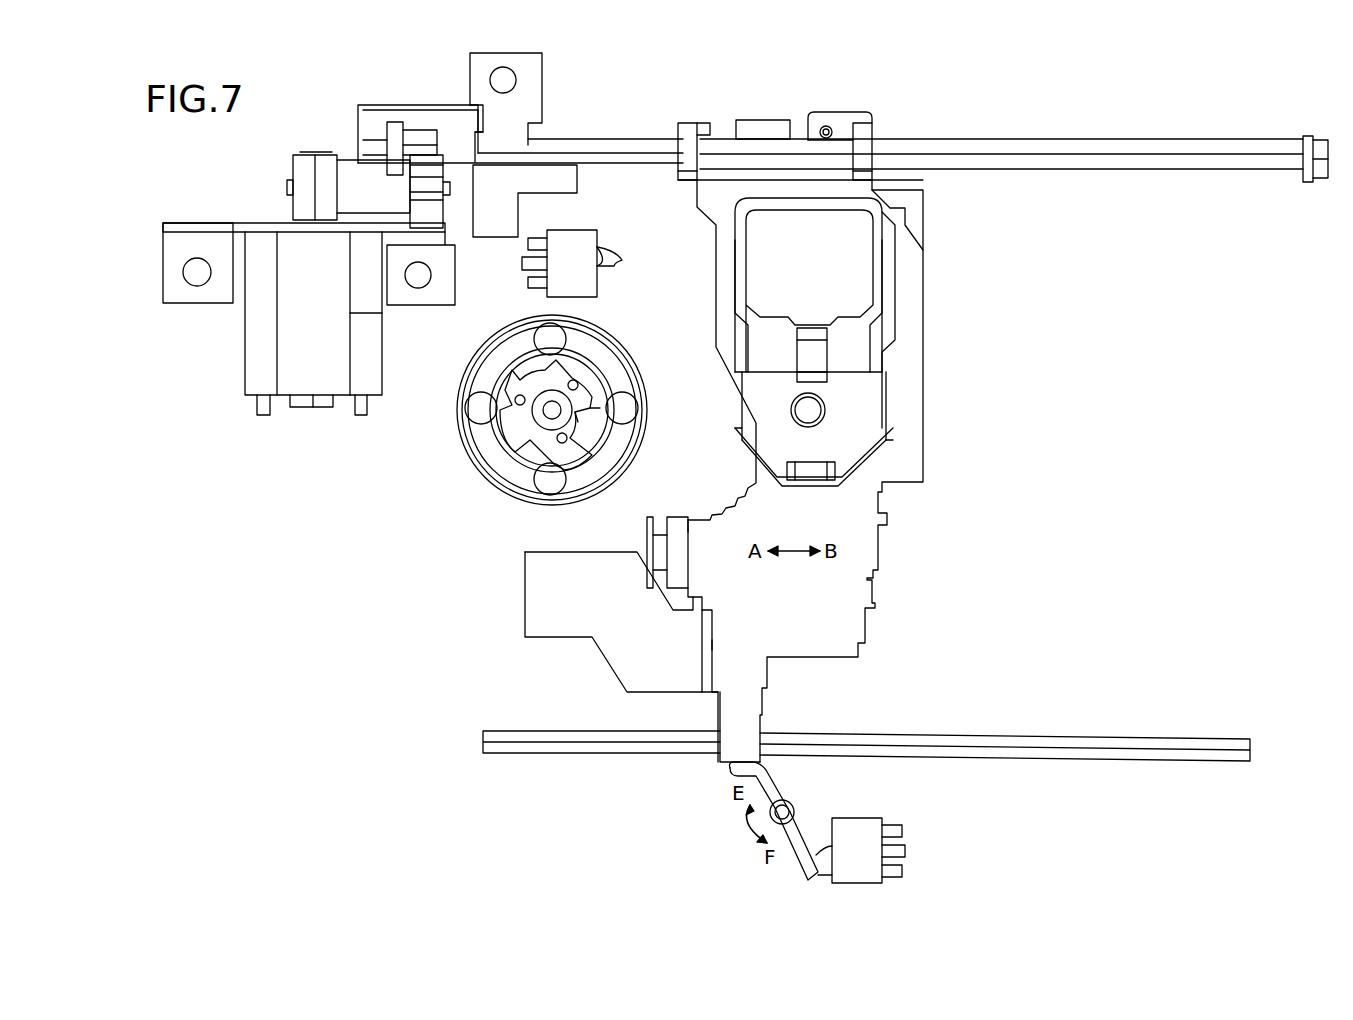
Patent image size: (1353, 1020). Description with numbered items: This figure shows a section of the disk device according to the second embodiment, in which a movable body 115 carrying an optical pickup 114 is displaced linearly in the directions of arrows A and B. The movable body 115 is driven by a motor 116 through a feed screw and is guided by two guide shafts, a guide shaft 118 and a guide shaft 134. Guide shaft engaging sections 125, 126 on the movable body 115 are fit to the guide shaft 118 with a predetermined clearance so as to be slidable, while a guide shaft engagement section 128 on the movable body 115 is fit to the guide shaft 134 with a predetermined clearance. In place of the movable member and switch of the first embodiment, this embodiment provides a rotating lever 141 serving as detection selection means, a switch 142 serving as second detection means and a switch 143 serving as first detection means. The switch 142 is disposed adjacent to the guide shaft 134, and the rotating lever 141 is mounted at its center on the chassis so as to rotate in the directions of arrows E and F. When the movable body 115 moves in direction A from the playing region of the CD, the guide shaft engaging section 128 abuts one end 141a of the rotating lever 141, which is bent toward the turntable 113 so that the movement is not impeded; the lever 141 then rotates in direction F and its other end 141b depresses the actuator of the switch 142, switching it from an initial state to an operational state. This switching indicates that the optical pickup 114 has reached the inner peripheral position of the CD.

The turntable 113 is at (512, 495).
The optical pickup 114 is at (825, 410).
The movable body 115 is at (878, 545).
The motor 116 is at (342, 400).
The guide shaft 118 is at (1134, 150).
The guide shaft engaging section 125 is at (868, 150).
The guide shaft engaging section 126 is at (680, 158).
The guide shaft engagement section 128 is at (760, 732).
The guide shaft 134 is at (982, 734).
The rotating lever 141 is at (795, 826).
The one end of the rotating lever 141a is at (776, 770).
The other end of the rotating lever 141b is at (812, 806).
The switch 142 is at (866, 820).
The switch 143 is at (600, 283).